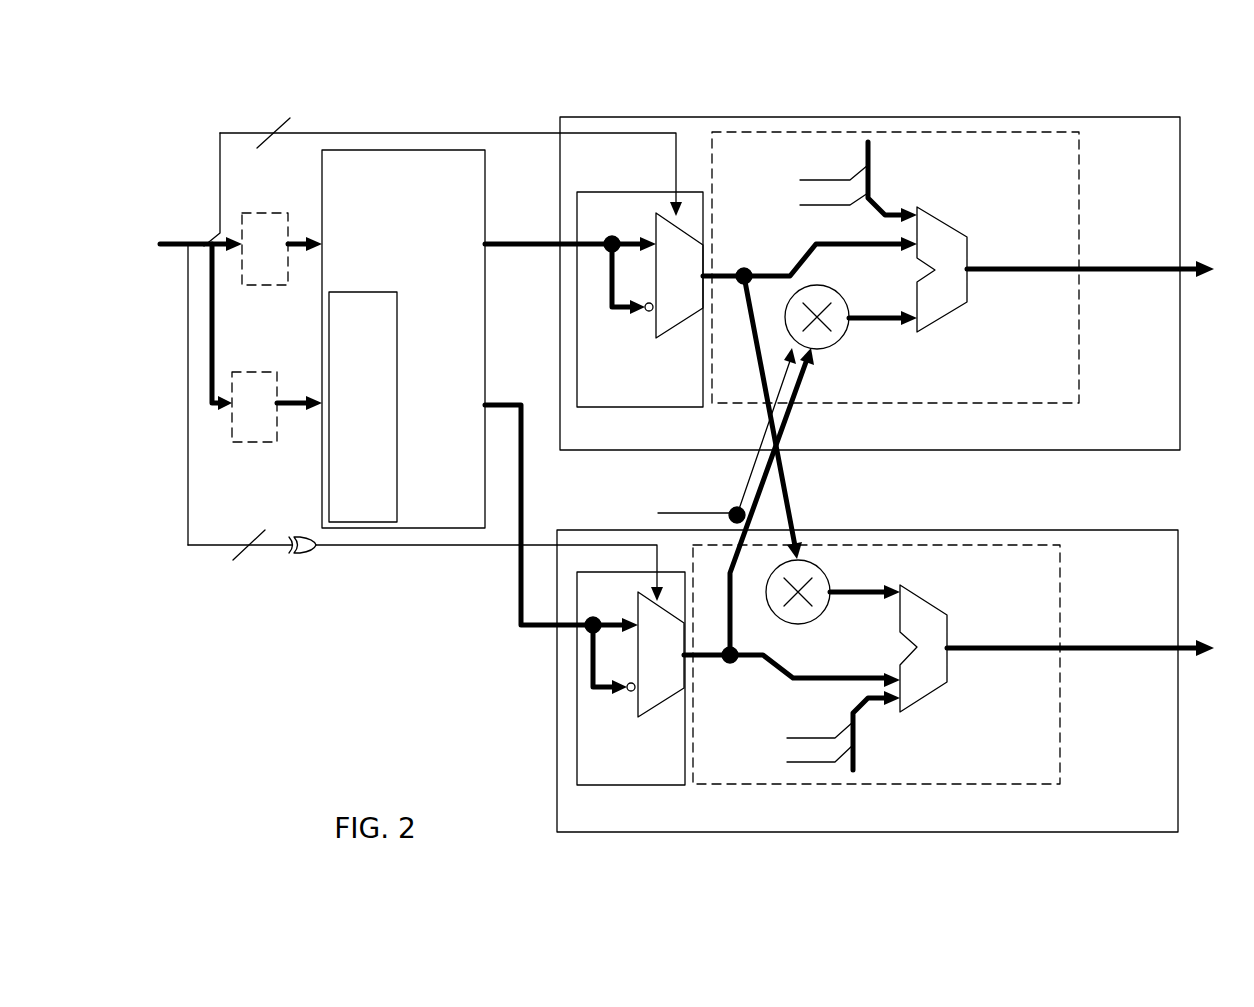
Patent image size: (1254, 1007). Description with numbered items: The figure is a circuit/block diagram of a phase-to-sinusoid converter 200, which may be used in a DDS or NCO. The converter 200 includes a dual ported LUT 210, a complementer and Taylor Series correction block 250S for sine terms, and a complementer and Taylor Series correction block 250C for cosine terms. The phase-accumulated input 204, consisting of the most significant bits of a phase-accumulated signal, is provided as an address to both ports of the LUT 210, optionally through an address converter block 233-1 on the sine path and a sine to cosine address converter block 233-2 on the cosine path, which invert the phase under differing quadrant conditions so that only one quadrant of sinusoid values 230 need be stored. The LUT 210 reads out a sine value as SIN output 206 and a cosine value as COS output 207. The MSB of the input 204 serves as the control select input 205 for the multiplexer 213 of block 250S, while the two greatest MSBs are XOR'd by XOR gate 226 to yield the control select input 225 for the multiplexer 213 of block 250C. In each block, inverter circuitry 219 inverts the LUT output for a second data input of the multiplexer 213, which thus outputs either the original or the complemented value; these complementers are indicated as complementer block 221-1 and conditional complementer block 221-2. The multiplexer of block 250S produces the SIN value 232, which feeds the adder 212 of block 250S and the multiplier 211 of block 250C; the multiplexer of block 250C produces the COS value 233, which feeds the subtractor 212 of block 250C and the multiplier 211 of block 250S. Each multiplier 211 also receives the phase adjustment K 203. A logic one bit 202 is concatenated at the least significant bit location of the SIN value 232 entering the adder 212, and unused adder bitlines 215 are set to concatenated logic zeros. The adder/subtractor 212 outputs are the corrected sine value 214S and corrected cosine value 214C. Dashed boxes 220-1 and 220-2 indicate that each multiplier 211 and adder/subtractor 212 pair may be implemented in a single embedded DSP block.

The phase-to-sinusoid converter 200 is at (1130, 62).
The logic 1 bit 202 is at (850, 180).
The phase adjustment K 203 is at (658, 513).
The phase-accumulated input 204 is at (187, 248).
The control select input 205 is at (387, 133).
The SIN output 206 is at (541, 243).
The COS output 207 is at (531, 506).
The dual ported LUT 210 is at (403, 339).
The multiplier 211 is at (850, 338).
The adder/subtractor 212 is at (943, 320).
The multiplexer 213 is at (672, 336).
The corrected sine value 214S is at (995, 269).
The corrected cosine value 214C is at (975, 648).
The lines 215 is at (818, 207).
The inverter circuitry 219 is at (648, 312).
The DSP block 220-1 is at (1080, 343).
The DSP block 220-2 is at (1062, 722).
The complementer block 221-1 is at (665, 407).
The conditional complementer block 221-2 is at (648, 785).
The control select input 225 is at (347, 547).
The XOR gate 226 is at (296, 556).
The sinusoid values 230 is at (363, 407).
The SIN value 232 is at (744, 268).
The COS value 233 is at (800, 400).
The address converter block 233-1 is at (265, 285).
The sine to cosine address converter block 233-2 is at (255, 442).
The complementer and Taylor Series correction block for sine terms 250S is at (890, 450).
The complementer and Taylor Series correction block for cosine terms 250C is at (1035, 530).